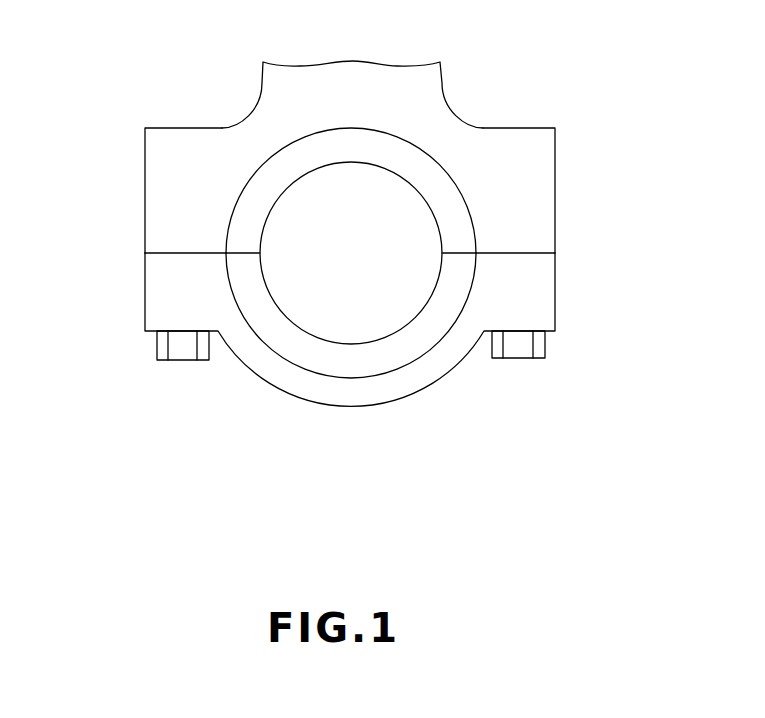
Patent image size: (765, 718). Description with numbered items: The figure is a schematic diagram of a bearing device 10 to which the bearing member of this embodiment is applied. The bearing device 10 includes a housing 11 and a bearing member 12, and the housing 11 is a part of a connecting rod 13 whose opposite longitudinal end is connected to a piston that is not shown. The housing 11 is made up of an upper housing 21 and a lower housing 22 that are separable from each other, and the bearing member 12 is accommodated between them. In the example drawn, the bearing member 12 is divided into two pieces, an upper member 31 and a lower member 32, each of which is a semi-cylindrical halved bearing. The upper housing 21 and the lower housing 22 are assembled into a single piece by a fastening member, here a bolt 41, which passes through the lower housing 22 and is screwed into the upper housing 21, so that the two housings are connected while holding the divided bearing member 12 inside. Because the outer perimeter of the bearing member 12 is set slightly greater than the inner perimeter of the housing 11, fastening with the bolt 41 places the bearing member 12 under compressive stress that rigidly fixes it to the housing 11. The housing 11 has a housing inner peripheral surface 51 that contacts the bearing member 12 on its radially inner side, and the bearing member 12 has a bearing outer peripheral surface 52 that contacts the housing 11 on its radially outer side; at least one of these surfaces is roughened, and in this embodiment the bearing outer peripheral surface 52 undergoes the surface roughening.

The bearing device 10 is at (335, 252).
The housing 11 is at (300, 211).
The bearing member 12 is at (275, 127).
The connecting rod 13 is at (443, 82).
The upper housing 21 is at (320, 134).
The lower housing 22 is at (163, 292).
The upper member 31 is at (453, 203).
The lower member 32 is at (390, 352).
The bolt 41 is at (182, 362).
The housing inner peripheral surface 51 is at (283, 358).
The bearing outer peripheral surface 52 is at (260, 167).